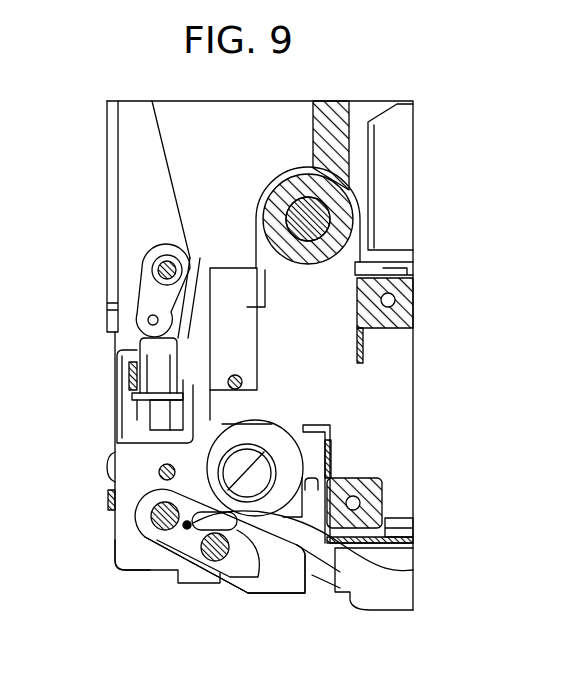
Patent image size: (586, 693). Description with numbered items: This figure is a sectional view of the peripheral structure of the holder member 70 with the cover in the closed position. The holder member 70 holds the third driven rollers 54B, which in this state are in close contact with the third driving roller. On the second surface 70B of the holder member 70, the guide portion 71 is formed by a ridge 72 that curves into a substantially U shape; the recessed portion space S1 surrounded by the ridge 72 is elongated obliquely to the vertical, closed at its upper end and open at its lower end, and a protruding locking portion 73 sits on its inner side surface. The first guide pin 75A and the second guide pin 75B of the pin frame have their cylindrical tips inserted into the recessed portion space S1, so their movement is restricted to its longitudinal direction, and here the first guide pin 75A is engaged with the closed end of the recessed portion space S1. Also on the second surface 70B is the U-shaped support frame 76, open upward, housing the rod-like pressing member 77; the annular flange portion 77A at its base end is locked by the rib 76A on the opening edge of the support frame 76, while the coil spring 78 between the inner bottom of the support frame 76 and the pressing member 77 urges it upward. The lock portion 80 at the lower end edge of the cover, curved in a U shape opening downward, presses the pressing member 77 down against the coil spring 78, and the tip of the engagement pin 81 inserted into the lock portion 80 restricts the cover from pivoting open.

The engagement pin 81 is at (164, 259).
The lock portion 80 is at (145, 262).
The pressing member 77 is at (140, 343).
The support frame 76 is at (122, 373).
The flange portion 77A is at (137, 418).
The coil spring 78 is at (155, 422).
The holder member 70 is at (130, 463).
The second surface 70B is at (132, 546).
The first guide pin 75A is at (165, 524).
The guide portion 71 is at (176, 561).
The locking portion 73 is at (197, 550).
The ridge 72 is at (230, 580).
The second guide pin 75B is at (258, 578).
The rib 76A is at (197, 352).
The third driven roller 54B is at (270, 445).
The recessed portion space S1 is at (413, 570).